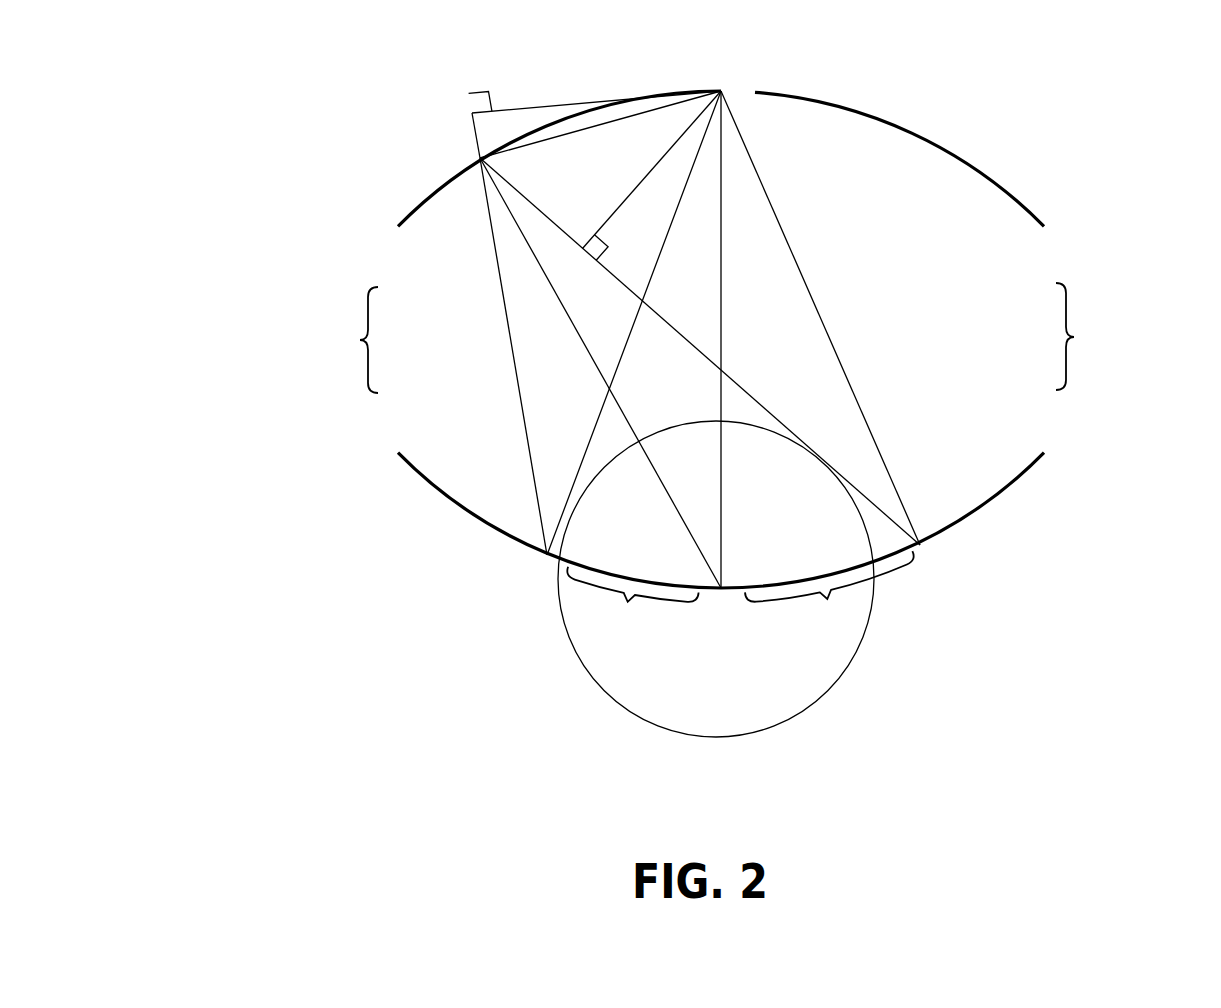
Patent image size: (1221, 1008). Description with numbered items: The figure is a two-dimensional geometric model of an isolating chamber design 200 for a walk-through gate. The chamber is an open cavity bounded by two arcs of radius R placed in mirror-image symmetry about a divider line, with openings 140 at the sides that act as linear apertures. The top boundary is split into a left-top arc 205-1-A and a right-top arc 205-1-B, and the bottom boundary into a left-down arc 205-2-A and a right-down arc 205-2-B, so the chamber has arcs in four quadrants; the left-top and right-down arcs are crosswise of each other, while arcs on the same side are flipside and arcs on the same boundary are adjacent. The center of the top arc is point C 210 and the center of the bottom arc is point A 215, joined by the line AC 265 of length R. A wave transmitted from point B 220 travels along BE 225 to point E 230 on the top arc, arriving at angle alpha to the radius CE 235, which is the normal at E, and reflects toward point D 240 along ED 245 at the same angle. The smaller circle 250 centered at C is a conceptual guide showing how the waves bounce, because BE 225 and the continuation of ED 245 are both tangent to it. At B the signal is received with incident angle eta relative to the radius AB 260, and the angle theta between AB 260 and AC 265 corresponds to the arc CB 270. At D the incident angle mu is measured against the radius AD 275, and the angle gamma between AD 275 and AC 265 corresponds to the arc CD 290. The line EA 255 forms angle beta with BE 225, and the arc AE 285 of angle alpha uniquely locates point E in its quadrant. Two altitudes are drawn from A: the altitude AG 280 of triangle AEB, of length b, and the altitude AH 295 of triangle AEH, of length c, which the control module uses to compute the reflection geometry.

The isolating chamber design 200 is at (270, 56).
The openings 140 is at (362, 340).
The left-top arc 205-1-A is at (427, 196).
The right-top arc 205-1-B is at (987, 175).
The left-down arc 205-2-A is at (493, 532).
The right-down arc 205-2-B is at (987, 507).
The point C 210 is at (740, 643).
The point A 215 is at (743, 82).
The point B 220 is at (924, 549).
The line BE 225 is at (728, 377).
The point E 230 is at (480, 158).
The radius CE 235 is at (625, 417).
The point D 240 is at (548, 560).
The line ED 245 is at (517, 377).
The smaller circle 250 is at (837, 685).
The line EA 255 is at (612, 124).
The radius AB 260 is at (803, 277).
The radius AC 265 is at (723, 318).
The arc CB 270 is at (824, 599).
The radius AD 275 is at (598, 417).
The altitude AG 280 is at (640, 186).
The arc AE 285 is at (472, 113).
The arc CD 290 is at (629, 602).
The altitude AH 295 is at (543, 112).